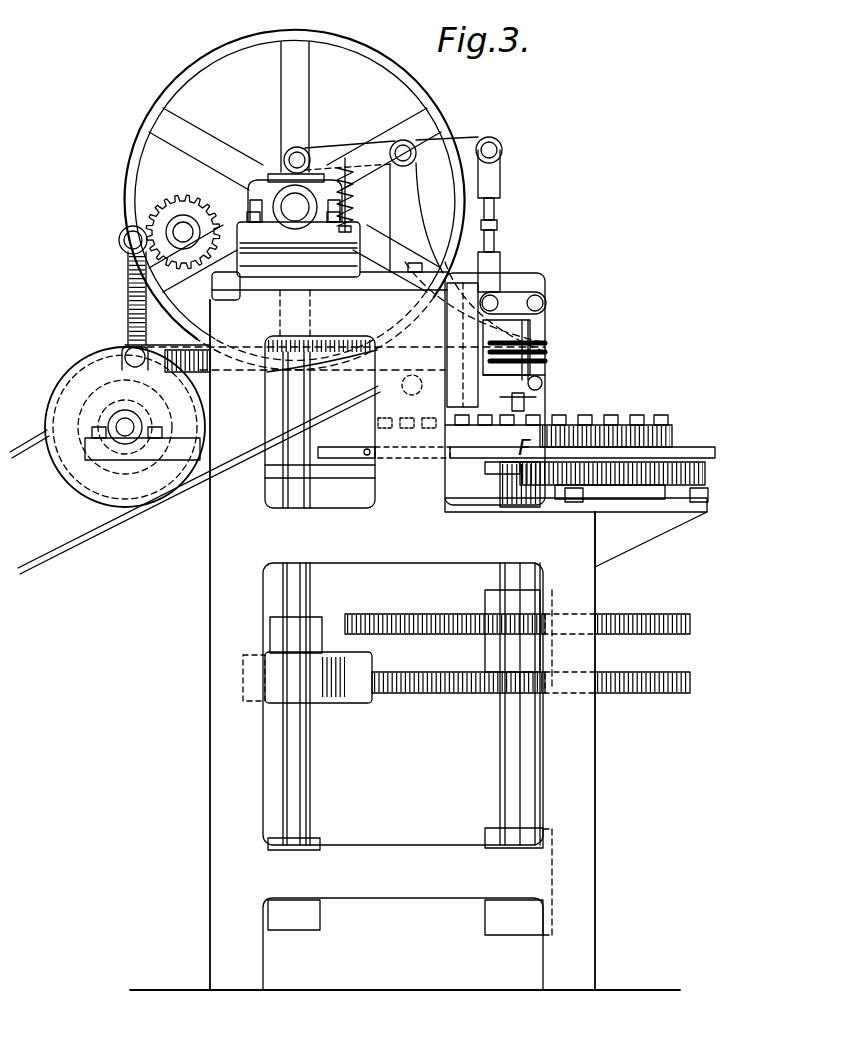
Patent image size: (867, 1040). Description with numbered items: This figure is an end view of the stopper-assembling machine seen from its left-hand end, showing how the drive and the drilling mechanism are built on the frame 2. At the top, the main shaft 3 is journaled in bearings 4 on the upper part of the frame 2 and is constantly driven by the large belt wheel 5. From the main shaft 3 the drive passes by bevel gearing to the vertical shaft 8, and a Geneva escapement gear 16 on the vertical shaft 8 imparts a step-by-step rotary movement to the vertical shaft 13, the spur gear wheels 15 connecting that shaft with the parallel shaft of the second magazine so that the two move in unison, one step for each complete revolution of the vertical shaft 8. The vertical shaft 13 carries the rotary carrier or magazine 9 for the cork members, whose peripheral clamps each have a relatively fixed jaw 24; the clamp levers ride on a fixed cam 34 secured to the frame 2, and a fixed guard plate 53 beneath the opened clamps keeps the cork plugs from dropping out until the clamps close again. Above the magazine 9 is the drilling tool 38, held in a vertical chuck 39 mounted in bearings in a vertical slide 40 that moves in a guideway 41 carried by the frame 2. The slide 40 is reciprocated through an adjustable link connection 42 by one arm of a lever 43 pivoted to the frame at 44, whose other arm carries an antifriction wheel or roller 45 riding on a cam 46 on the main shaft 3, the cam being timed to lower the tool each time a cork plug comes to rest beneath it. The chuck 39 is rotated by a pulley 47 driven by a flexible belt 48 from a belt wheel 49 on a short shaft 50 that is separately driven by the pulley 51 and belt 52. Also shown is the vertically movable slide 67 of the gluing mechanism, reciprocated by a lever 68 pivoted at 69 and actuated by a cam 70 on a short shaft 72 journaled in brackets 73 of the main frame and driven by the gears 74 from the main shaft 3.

The frame 2 is at (405, 631).
The main shaft 3 is at (295, 207).
The bearings 4 is at (338, 235).
The belt wheel 5 is at (194, 74).
The vertical shaft 8 is at (311, 585).
The rotary carrier or magazine 9 is at (533, 431).
The vertical shaft 13 is at (502, 743).
The spur gear wheels 15 is at (450, 630).
The Geneva escapement gear 16 is at (402, 694).
The fixed jaw 24 is at (716, 456).
The fixed cam 34 is at (576, 514).
The drilling tool 38 is at (528, 405).
The vertical chuck 39 is at (544, 373).
The vertical slide 40 is at (541, 302).
The guideway 41 is at (470, 306).
The adjustable link connection 42 is at (500, 238).
The lever 43 is at (480, 141).
The pivot 44 is at (413, 140).
The antifriction wheel or roller 45 is at (297, 147).
The cam 46 is at (268, 178).
The pulley 47 is at (545, 345).
The flexible belt 48 is at (245, 462).
The belt wheel 49 is at (140, 500).
The short shaft 50 is at (122, 448).
The pulley 51 is at (118, 400).
The belt 52 is at (28, 446).
The fixed guard plate 53 is at (707, 468).
The vertically movable slide 67 is at (275, 404).
The lever 68 is at (180, 352).
The pivot 69 is at (127, 352).
The cam 70 is at (131, 253).
The short shaft 72 is at (176, 226).
The brackets 73 is at (230, 285).
The gears 74 is at (180, 200).